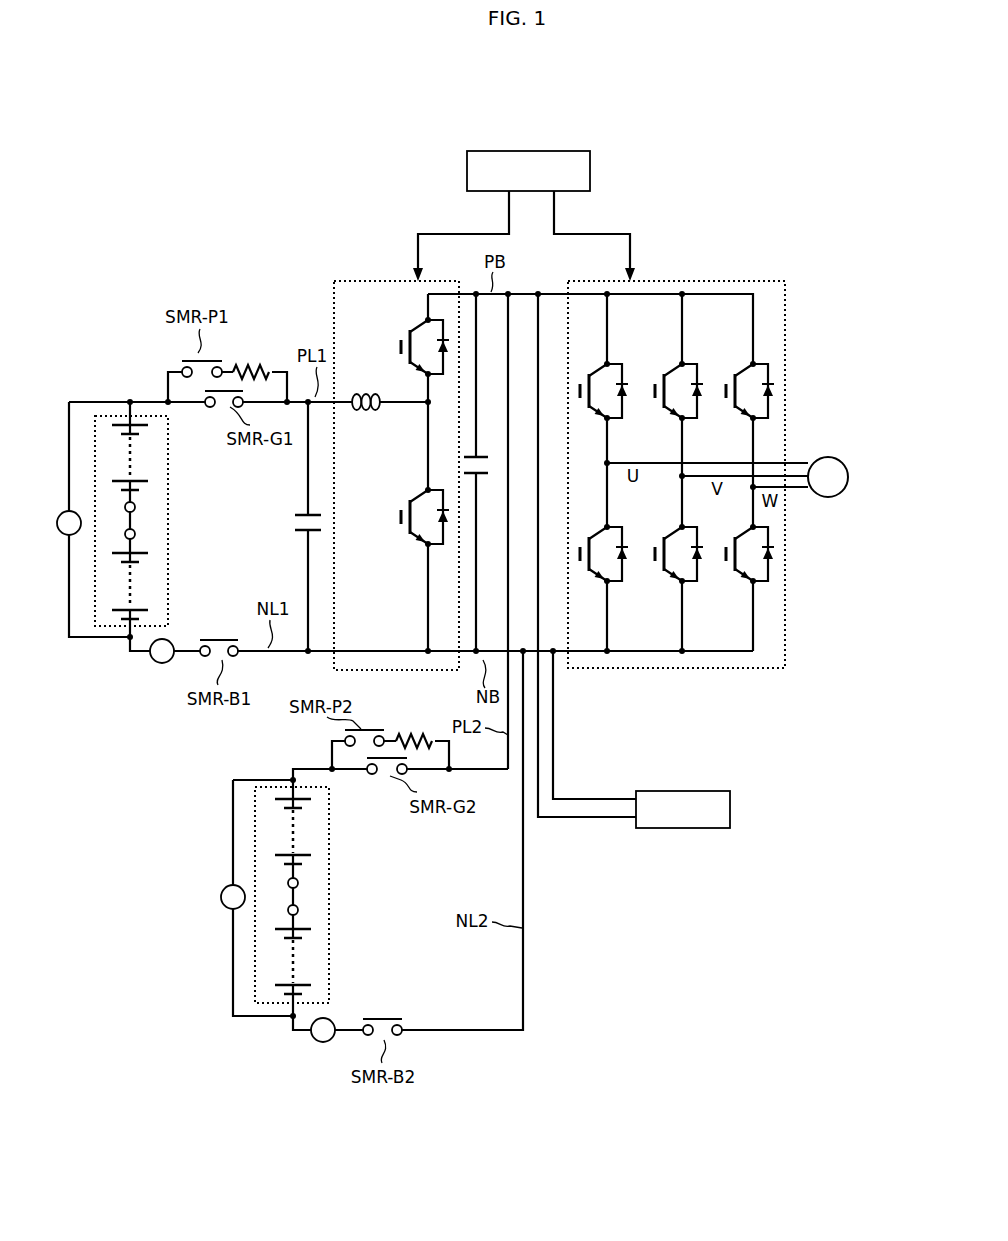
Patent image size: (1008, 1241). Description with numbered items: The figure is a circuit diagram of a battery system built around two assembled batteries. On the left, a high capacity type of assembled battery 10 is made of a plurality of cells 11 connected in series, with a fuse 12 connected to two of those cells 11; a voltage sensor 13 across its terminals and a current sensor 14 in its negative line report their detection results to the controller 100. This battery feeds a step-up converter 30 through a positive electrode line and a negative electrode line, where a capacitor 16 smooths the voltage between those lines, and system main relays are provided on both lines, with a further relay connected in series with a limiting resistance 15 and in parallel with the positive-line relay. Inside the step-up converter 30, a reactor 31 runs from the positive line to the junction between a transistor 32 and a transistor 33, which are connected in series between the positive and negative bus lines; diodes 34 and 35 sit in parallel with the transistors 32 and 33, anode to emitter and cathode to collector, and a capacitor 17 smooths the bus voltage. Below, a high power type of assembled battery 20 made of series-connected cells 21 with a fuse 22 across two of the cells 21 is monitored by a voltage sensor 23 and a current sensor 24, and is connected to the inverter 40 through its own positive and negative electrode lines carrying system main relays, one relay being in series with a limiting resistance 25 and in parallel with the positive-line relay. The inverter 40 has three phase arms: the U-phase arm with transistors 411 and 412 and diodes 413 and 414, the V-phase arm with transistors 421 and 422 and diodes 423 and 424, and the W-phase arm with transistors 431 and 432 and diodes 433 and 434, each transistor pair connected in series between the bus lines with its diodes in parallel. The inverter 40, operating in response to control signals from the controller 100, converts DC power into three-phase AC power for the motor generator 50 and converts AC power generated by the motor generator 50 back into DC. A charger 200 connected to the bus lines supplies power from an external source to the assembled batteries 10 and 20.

The high capacity type of assembled battery 10 is at (150, 495).
The cell 11 is at (158, 428).
The fuse 12 is at (137, 520).
The voltage sensor 13 is at (61, 536).
The current sensor 14 is at (158, 664).
The limiting resistance 15 is at (260, 360).
The capacitor 16 is at (297, 536).
The capacitor 17 is at (485, 477).
The high power type of assembled battery 20 is at (281, 895).
The cell 21 is at (321, 804).
The fuse 22 is at (300, 890).
The voltage sensor 23 is at (221, 897).
The current sensor 24 is at (320, 1043).
The limiting resistance 25 is at (433, 733).
The step-up converter 30 is at (396, 450).
The reactor 31 is at (364, 418).
The transistor 32 is at (401, 338).
The transistor 33 is at (407, 528).
The diode 34 is at (445, 367).
The diode 35 is at (447, 532).
The inverter 40 is at (702, 450).
The motor generator 50 is at (828, 457).
The controller 100 is at (528, 151).
The charger 200 is at (685, 830).
The transistor 411 is at (588, 405).
The transistor 412 is at (588, 570).
The diode 413 is at (627, 402).
The diode 414 is at (627, 565).
The transistor 421 is at (662, 378).
The transistor 422 is at (662, 542).
The diode 423 is at (702, 400).
The diode 424 is at (702, 565).
The transistor 431 is at (733, 378).
The transistor 432 is at (735, 543).
The diode 433 is at (775, 393).
The diode 434 is at (774, 557).